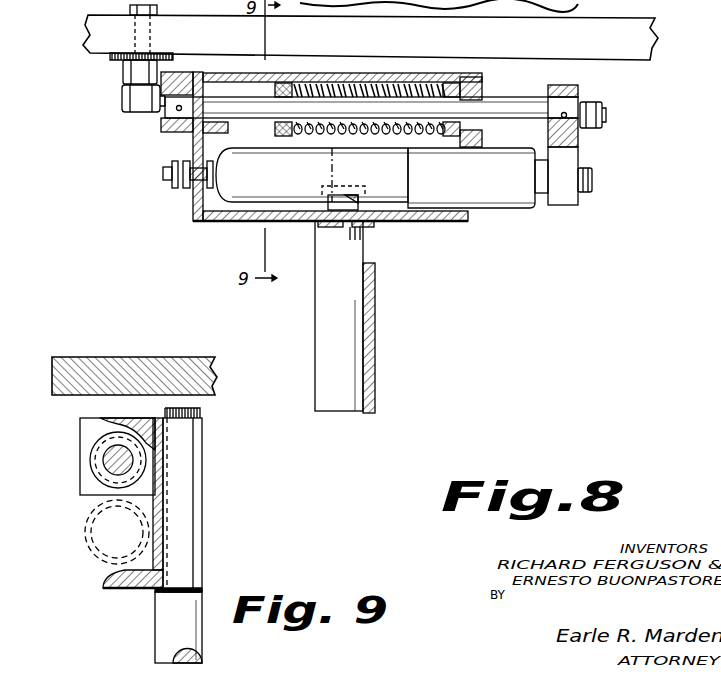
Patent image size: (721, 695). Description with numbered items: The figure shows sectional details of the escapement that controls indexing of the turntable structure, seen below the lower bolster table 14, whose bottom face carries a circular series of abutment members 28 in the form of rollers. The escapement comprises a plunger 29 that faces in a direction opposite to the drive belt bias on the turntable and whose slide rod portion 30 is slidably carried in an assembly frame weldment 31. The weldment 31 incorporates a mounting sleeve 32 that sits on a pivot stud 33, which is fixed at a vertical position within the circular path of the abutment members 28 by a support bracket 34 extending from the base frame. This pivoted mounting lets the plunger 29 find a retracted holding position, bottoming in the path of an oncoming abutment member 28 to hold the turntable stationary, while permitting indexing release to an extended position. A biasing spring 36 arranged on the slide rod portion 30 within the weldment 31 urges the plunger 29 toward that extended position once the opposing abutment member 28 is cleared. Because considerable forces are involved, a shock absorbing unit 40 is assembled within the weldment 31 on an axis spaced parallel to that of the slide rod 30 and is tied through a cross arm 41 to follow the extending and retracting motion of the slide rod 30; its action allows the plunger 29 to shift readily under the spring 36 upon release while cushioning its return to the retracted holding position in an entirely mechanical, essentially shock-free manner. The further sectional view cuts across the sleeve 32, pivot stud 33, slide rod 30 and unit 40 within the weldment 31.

In FIG. 8, the lower bolster table 14 is at (93, 28).
In FIG. 9, the lower bolster table 14 is at (100, 357).
In FIG. 8, the abutment member 28 is at (124, 100).
In FIG. 8, the plunger 29 is at (163, 132).
In FIG. 8, the slide rod portion 30 is at (511, 107).
In FIG. 9, the slide rod portion 30 is at (115, 459).
In FIG. 8, the assembly frame weldment 31 is at (218, 223).
In FIG. 9, the assembly frame weldment 31 is at (122, 590).
In FIG. 8, the mounting sleeve 32 is at (312, 208).
In FIG. 9, the mounting sleeve 32 is at (202, 492).
In FIG. 8, the pivot stud 33 is at (320, 318).
In FIG. 9, the pivot stud 33 is at (205, 641).
In FIG. 8, the support bracket 34 is at (378, 316).
In FIG. 8, the biasing spring 36 is at (358, 80).
In FIG. 8, the shock absorbing unit 40 is at (511, 205).
In FIG. 9, the shock absorbing unit 40 is at (85, 536).
In FIG. 8, the cross arm 41 is at (580, 157).